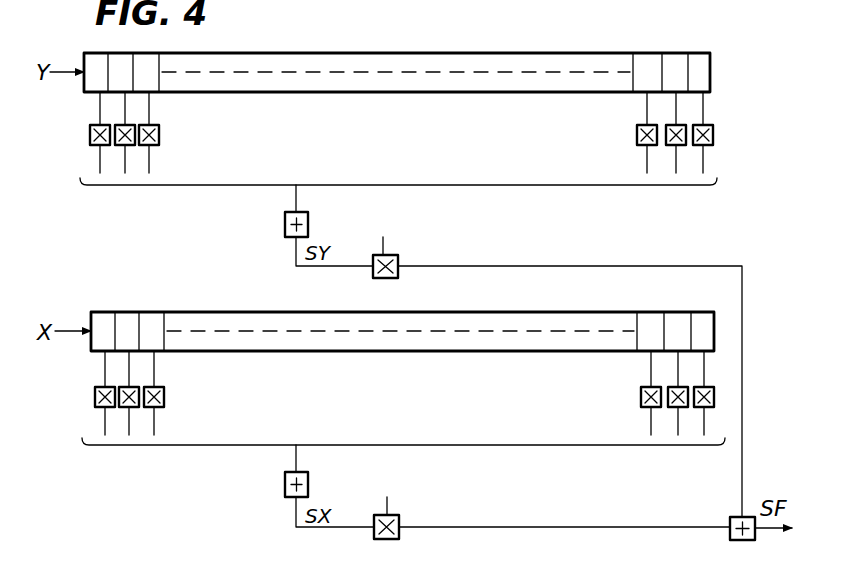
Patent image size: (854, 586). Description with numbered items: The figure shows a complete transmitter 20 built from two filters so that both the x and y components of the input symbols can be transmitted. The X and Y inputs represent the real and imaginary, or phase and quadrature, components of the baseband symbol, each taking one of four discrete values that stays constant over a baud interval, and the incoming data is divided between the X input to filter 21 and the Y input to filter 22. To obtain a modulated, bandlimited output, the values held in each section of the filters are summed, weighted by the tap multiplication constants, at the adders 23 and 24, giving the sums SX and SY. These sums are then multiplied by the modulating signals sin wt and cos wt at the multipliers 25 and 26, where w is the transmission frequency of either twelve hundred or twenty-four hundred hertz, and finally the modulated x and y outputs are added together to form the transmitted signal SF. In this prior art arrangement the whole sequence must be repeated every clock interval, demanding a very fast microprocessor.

The transmitter 20 is at (364, 49).
The x filter 21 is at (534, 311).
The y filter 22 is at (428, 97).
The summing point for x filter 23 is at (285, 488).
The summing point for y filter 24 is at (285, 229).
The sine multiplier 25 is at (390, 540).
The cosine multiplier 26 is at (388, 279).